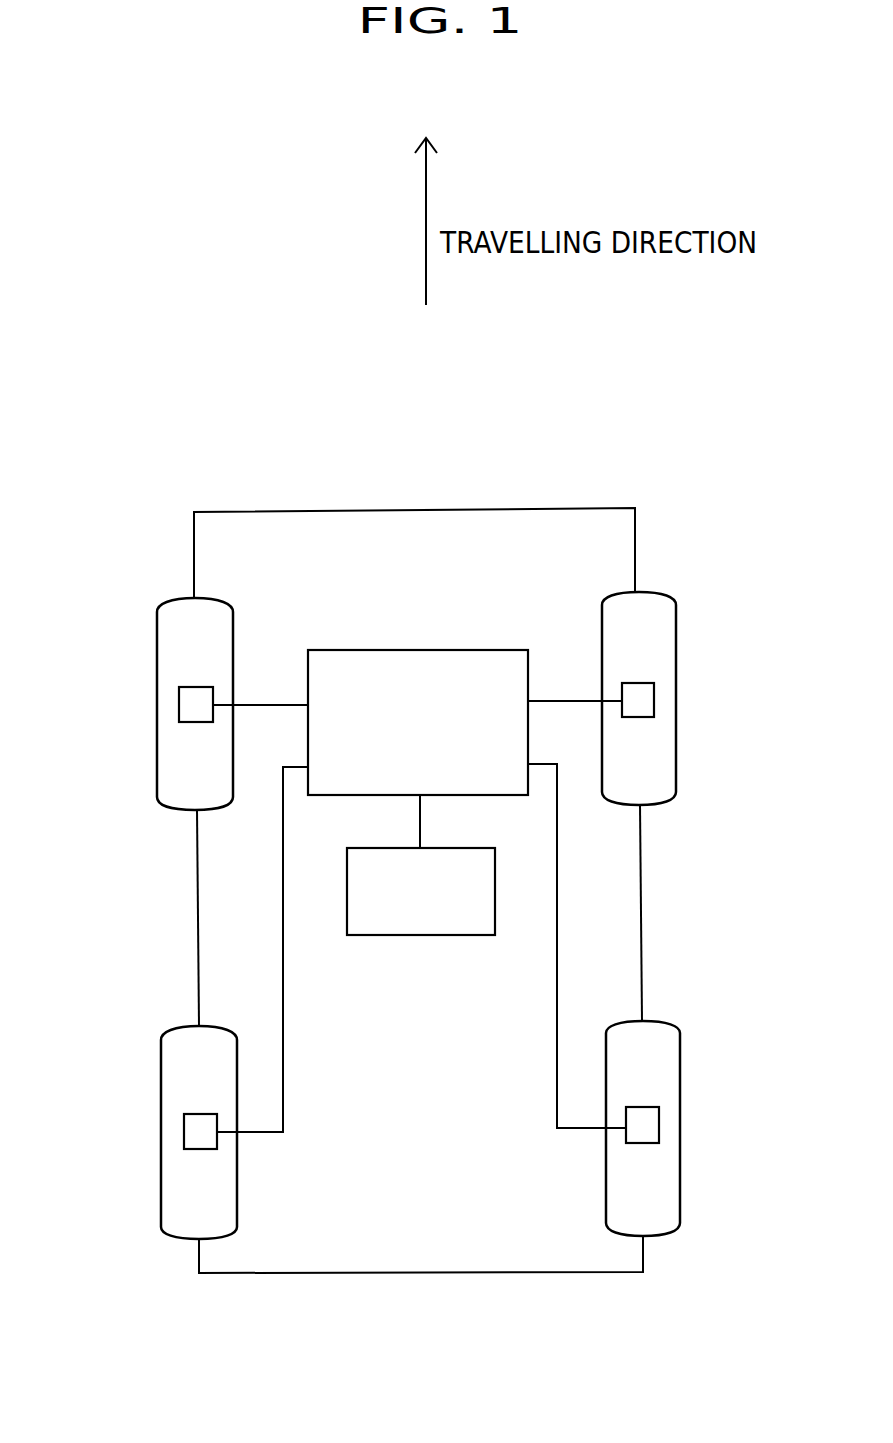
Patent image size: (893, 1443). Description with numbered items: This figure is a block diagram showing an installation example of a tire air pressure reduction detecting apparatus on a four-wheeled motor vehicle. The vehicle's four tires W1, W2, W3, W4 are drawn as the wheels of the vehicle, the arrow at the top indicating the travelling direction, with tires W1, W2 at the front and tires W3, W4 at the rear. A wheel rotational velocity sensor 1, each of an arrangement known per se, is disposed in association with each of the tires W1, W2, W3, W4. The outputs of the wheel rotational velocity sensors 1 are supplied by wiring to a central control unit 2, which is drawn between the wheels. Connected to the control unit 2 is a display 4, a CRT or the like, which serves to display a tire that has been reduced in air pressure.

The wheel rotational velocity sensor 1 is at (180, 708).
The control unit 2 is at (507, 650).
The display 4 is at (403, 935).
The tire W1 is at (138, 605).
The tire W2 is at (688, 605).
The tire W3 is at (132, 1223).
The tire W4 is at (696, 1229).